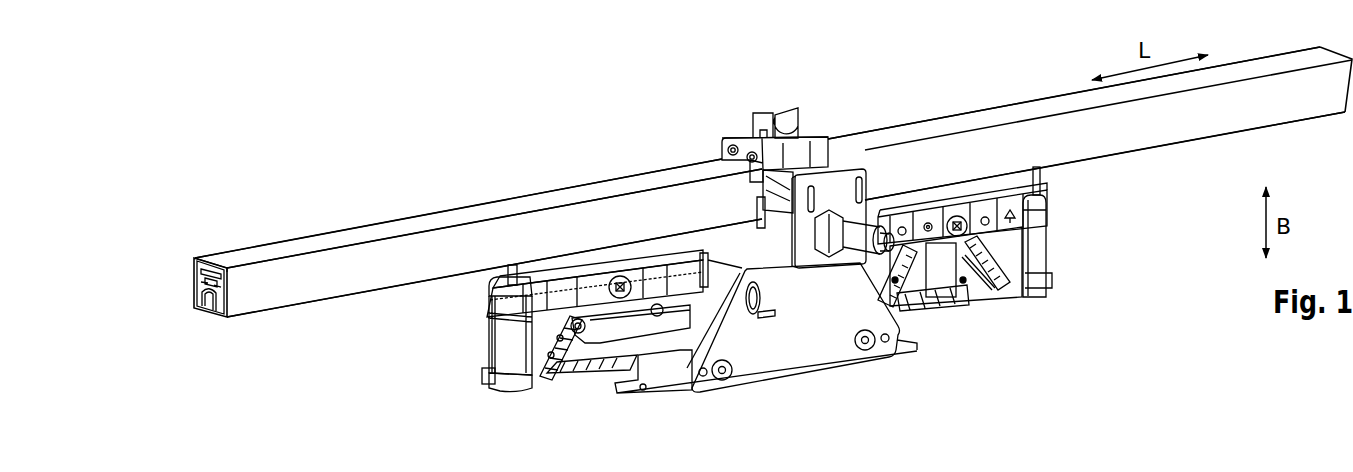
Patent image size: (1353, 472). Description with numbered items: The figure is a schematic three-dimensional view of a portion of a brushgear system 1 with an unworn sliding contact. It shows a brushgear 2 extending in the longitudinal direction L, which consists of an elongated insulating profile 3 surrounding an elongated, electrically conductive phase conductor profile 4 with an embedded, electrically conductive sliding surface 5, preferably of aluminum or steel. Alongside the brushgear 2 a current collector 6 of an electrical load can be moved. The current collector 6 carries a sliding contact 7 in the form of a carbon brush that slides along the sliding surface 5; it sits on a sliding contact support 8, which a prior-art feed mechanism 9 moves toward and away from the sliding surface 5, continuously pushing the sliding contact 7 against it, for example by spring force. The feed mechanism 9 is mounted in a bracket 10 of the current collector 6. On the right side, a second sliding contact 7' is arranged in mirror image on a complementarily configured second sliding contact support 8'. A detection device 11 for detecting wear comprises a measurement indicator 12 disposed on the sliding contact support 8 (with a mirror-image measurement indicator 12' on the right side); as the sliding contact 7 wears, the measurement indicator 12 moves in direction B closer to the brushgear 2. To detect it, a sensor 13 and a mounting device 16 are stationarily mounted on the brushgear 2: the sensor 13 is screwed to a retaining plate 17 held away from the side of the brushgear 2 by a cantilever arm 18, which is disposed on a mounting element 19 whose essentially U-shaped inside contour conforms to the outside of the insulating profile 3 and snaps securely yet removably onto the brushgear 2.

The brushgear system 1 is at (207, 113).
The brushgear 2 is at (306, 232).
The insulating profile 3 is at (225, 258).
The phase conductor profile 4 is at (197, 284).
The sliding surface 5 is at (210, 310).
The current collector 6 is at (991, 316).
The sliding contact 7 is at (544, 292).
The second sliding contact 7' is at (1024, 209).
The sliding contact support 8 is at (457, 337).
The second sliding contact support 8' is at (1096, 232).
The feed mechanism 9 is at (580, 355).
The bracket 10 is at (627, 390).
The detection device 11 is at (687, 133).
The measurement indicator 12 is at (611, 259).
The second measurement indicator 12' is at (971, 190).
The sensor 13 is at (857, 227).
The mounting device 16 is at (743, 135).
The retaining plate 17 is at (857, 165).
The cantilever arm 18 is at (835, 167).
The mounting element 19 is at (808, 130).